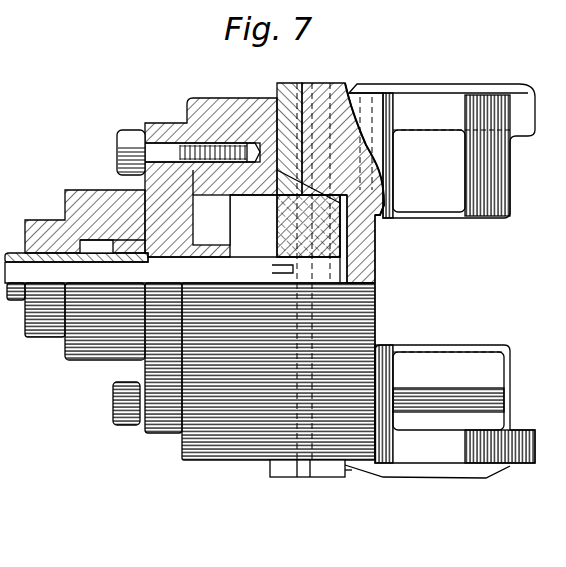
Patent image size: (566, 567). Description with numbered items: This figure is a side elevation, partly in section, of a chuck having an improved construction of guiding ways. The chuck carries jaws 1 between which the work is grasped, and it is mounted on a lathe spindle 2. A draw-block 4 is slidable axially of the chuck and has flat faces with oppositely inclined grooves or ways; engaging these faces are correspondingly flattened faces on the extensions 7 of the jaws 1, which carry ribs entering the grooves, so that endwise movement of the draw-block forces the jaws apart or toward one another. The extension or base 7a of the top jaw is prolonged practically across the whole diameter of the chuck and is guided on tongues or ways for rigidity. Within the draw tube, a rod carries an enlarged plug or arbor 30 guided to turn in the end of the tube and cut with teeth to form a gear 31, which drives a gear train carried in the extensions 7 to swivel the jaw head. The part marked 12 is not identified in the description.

The jaws 1 is at (509, 176).
The lathe spindle 2 is at (76, 226).
The draw-block 4 is at (240, 223).
The extensions of the jaws 7 is at (358, 90).
The jaw extension or base 7a is at (308, 82).
The block 12 is at (227, 99).
The plug or arbor 30 is at (190, 367).
The gear 31 is at (285, 268).